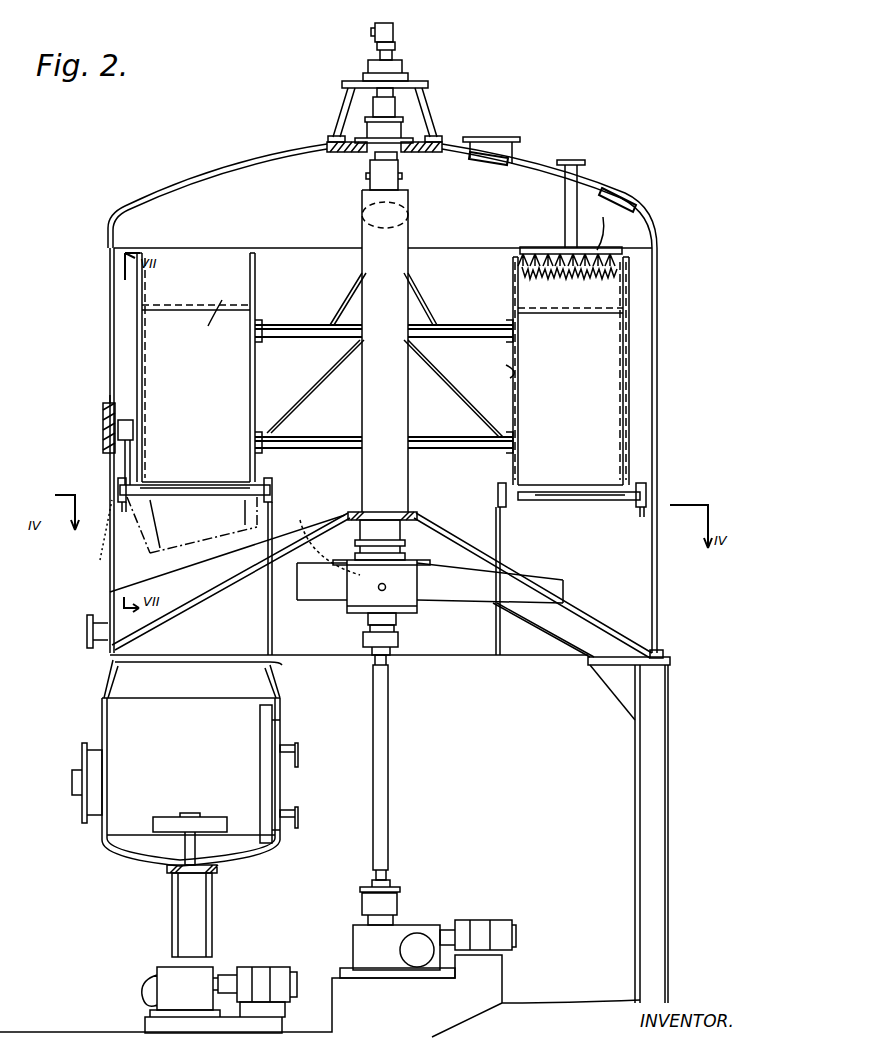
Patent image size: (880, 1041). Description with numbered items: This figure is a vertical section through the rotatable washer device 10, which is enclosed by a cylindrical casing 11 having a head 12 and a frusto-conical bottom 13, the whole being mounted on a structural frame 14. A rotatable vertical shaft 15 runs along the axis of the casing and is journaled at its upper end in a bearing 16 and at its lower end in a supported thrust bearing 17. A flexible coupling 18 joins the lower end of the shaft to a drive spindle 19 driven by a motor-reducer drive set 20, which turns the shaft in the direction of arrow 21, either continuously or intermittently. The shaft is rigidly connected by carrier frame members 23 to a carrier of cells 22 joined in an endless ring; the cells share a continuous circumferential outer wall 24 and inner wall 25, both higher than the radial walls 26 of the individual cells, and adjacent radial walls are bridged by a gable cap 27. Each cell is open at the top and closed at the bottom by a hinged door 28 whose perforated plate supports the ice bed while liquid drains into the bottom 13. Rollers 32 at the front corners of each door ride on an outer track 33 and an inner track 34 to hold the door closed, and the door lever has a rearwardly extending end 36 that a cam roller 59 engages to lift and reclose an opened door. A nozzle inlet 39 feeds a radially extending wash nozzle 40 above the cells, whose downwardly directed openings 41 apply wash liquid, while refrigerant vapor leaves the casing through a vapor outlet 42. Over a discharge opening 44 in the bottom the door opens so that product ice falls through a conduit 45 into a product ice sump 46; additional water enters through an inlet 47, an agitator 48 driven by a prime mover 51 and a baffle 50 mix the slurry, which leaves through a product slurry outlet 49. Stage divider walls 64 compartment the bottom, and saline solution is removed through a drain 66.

The rotatable washer device 10 is at (438, 479).
The cylindrical casing 11 is at (657, 385).
The head 12 is at (247, 162).
The frusto-conical bottom 13 is at (578, 600).
The structural frame 14 is at (665, 742).
The rotatable vertical shaft 15 is at (403, 395).
The bearing 16 is at (398, 133).
The thrust bearing 17 is at (400, 613).
The flexible coupling 18 is at (398, 640).
The drive spindle 19 is at (388, 748).
The motor-reducer drive set 20 is at (413, 925).
The arrow 21 is at (410, 228).
The cells 22 is at (202, 389).
The carrier frame members 23 is at (474, 325).
The circumferential outer wall 24 is at (140, 342).
The circumferential inner wall 25 is at (508, 366).
The radial walls 26 is at (228, 292).
The gable cap 27 is at (172, 305).
The door 28 is at (215, 466).
The rollers 32 is at (118, 482).
The outer track 33 is at (120, 505).
The inner track 34 is at (272, 510).
The rearwardly extending end 36 is at (140, 452).
The nozzle inlet 39 is at (578, 160).
The wash nozzle 40 is at (538, 249).
The downwardly directed openings 41 is at (611, 231).
The vapor outlet 42 is at (492, 137).
The discharge opening 44 is at (232, 580).
The conduit 45 is at (265, 655).
The product ice sump 46 is at (196, 764).
The inlet 47 is at (290, 748).
The agitator 48 is at (205, 830).
The product slurry outlet 49 is at (299, 814).
The baffle 50 is at (272, 790).
The prime mover 51 is at (215, 975).
The cam roller 59 is at (135, 423).
The stage divider walls 64 is at (145, 580).
The drain 66 is at (88, 635).